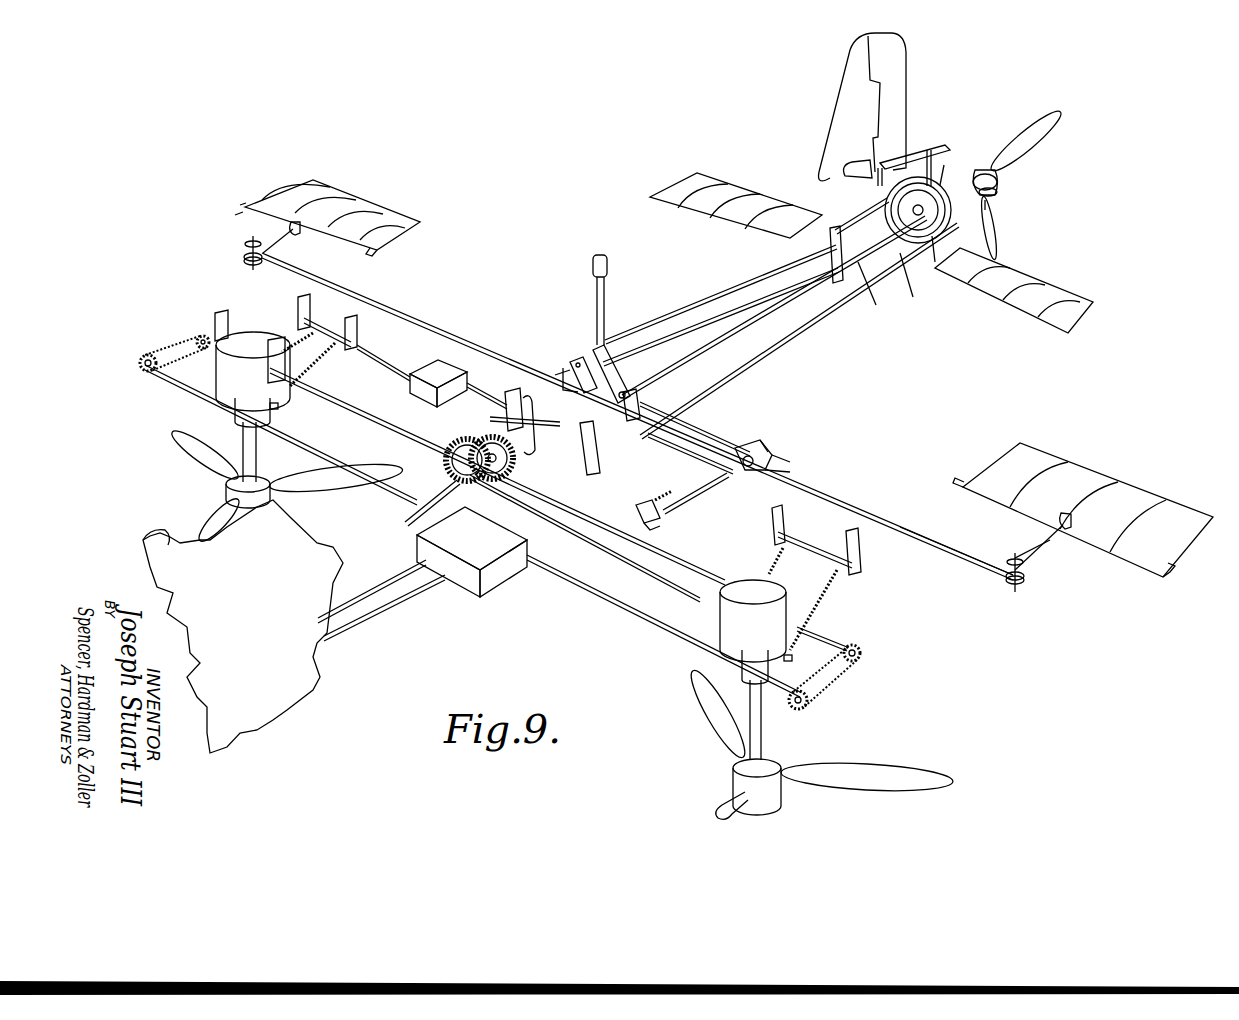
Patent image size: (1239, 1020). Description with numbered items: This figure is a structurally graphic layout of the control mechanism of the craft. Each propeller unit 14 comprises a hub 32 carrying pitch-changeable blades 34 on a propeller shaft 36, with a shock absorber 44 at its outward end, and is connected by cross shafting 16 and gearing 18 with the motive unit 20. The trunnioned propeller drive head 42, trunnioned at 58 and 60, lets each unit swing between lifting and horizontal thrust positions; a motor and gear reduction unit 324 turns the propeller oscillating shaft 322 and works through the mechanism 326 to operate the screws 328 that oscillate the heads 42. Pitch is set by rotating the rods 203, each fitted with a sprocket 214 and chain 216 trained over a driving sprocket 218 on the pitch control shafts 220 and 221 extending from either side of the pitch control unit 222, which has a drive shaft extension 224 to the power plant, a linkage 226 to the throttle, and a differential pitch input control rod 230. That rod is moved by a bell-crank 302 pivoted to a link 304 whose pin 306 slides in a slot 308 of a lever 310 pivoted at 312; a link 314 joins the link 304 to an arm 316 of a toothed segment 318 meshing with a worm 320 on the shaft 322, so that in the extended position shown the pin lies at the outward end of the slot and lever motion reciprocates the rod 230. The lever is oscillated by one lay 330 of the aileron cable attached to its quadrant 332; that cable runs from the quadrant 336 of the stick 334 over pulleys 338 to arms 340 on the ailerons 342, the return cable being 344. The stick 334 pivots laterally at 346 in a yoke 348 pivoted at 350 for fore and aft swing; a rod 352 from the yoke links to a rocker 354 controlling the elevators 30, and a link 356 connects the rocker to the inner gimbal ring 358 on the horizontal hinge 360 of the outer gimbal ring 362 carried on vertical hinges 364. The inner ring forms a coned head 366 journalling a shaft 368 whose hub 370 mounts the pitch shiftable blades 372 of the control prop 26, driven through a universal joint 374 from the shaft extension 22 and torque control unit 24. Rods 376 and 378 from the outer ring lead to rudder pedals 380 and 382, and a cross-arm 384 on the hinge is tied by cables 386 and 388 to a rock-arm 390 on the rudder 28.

The propeller unit 14 is at (285, 416).
The cross shafting 16 is at (326, 395).
The gearing 18 is at (470, 478).
The motive unit 20 is at (320, 665).
The shaft extension 22 is at (727, 330).
The torque control unit 24 is at (490, 419).
The control prop 26 is at (1000, 182).
The rudder 28 is at (906, 57).
The elevators 30 is at (742, 188).
The hub 32 is at (262, 480).
The blades 34 is at (330, 494).
The propeller shaft 36 is at (243, 440).
The propeller drive head 42 is at (236, 340).
The shock absorber 44 is at (720, 620).
The trunnion 58 is at (278, 338).
The trunnion journal 60 is at (226, 348).
The rod 203 is at (208, 350).
The sprocket 214 is at (197, 338).
The chain 216 is at (165, 352).
The driving sprocket 218 is at (148, 371).
The pitch control shaft 220 is at (347, 460).
The pitch control shaft 221 is at (597, 597).
The pitch control unit 222 is at (490, 583).
The drive shaft extension 224 is at (386, 590).
The linkage 226 is at (364, 576).
The differential pitch input control rod 230 is at (560, 523).
The bell-crank 302 is at (665, 414).
The link 304 is at (722, 446).
The pin 306 is at (750, 468).
The slot 308 is at (752, 452).
The lever 310 is at (776, 462).
The pivot 312 is at (780, 468).
The link 314 is at (700, 492).
The arm 316 is at (663, 522).
The toothed segment 318 is at (645, 512).
The worm 320 is at (666, 492).
The propeller oscillating shaft 322 is at (405, 365).
The motor and gear reduction unit 324 is at (432, 384).
The mechanism 326 is at (327, 326).
The screws 328 is at (318, 360).
The control cable 330 is at (412, 316).
The quadrant 332 is at (770, 455).
The stick 334 is at (604, 296).
The quadrant 336 is at (572, 368).
The pulleys 338 is at (249, 241).
The arms 340 is at (300, 236).
The ailerons 342 is at (398, 230).
The return cable 344 is at (965, 552).
The pivot 346 is at (585, 358).
The yoke 348 is at (626, 382).
The pivot 350 is at (640, 400).
The rod 352 is at (683, 330).
The rocker 354 is at (830, 258).
The link 356 is at (874, 293).
The inner gimbal ring 358 is at (905, 222).
The horizontal hinge 360 is at (951, 210).
The outer gimbal ring 362 is at (945, 232).
The vertical hinges 364 is at (944, 168).
The coned head 366 is at (990, 200).
The shaft 368 is at (985, 172).
The hub 370 is at (996, 192).
The pitch shiftable blades 372 is at (1060, 118).
The universal joint 374 is at (915, 279).
The rod 376 is at (740, 285).
The rod 378 is at (792, 342).
The rudder pedal 380 is at (511, 395).
The rudder pedal 382 is at (588, 458).
The cross-arm 384 is at (930, 148).
The cable 386 is at (884, 160).
The cable 388 is at (872, 195).
The rock-arm 390 is at (852, 170).